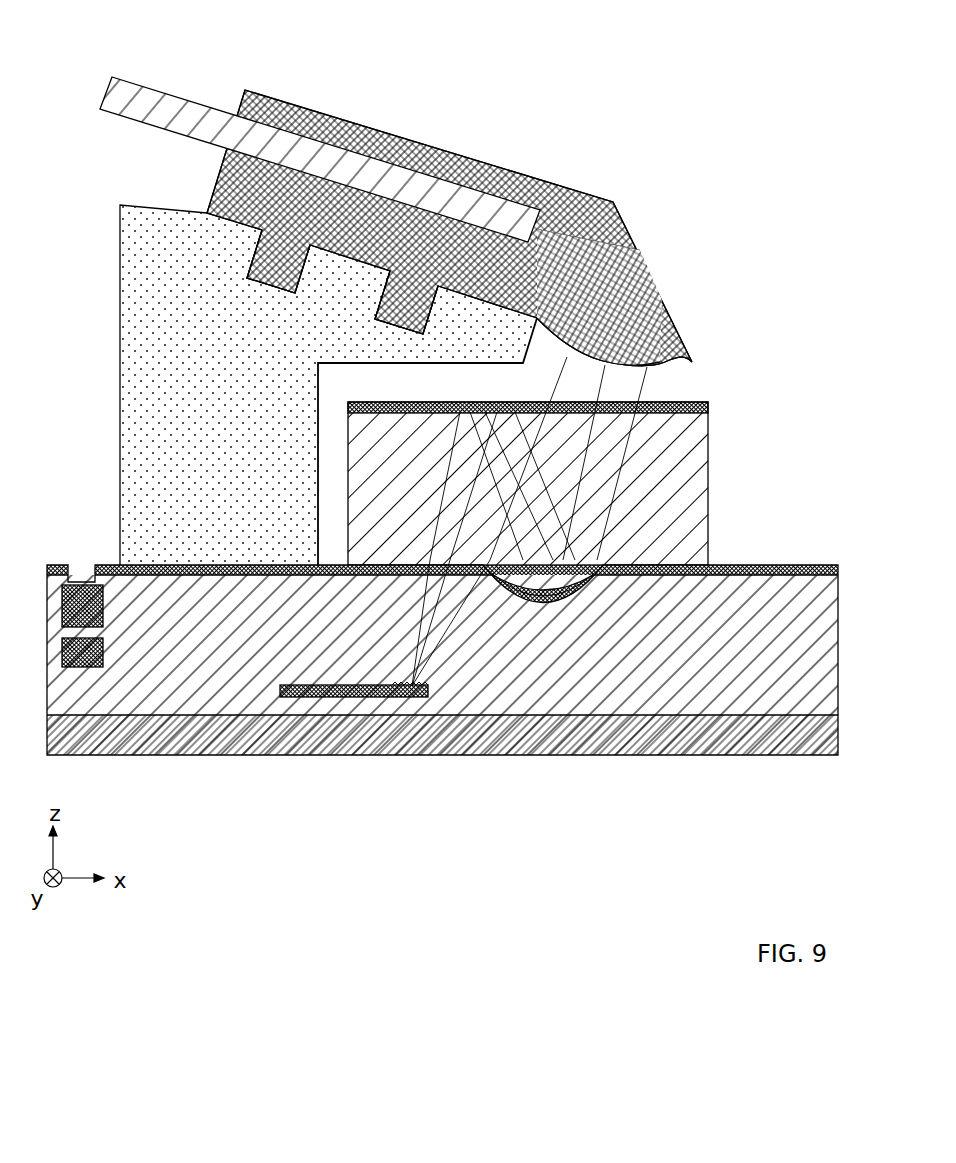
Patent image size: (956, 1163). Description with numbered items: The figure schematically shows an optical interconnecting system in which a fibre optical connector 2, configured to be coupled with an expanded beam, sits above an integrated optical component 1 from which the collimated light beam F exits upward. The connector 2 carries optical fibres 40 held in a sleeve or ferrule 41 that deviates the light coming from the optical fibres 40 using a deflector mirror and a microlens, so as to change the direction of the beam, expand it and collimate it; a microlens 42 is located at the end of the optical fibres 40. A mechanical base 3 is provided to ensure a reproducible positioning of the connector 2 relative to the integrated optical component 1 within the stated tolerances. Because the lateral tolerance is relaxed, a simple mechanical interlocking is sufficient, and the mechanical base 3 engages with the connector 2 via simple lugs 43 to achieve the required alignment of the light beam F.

The integrated optical component 1 is at (766, 514).
The fibre optical connector 2 is at (395, 207).
The mechanical base 3 is at (130, 434).
The optical fibres 40 is at (171, 119).
The ferrule 41 is at (327, 128).
The microlens 42 is at (662, 367).
The lugs 43 is at (376, 323).
The light beam F is at (650, 385).